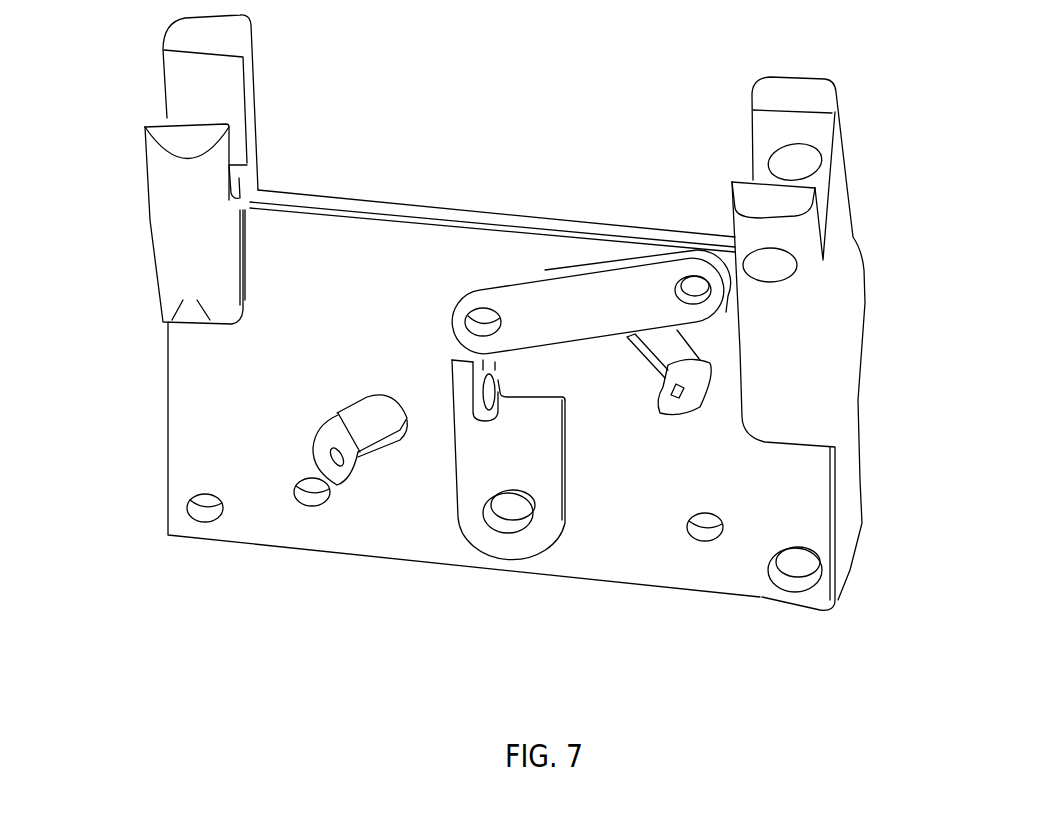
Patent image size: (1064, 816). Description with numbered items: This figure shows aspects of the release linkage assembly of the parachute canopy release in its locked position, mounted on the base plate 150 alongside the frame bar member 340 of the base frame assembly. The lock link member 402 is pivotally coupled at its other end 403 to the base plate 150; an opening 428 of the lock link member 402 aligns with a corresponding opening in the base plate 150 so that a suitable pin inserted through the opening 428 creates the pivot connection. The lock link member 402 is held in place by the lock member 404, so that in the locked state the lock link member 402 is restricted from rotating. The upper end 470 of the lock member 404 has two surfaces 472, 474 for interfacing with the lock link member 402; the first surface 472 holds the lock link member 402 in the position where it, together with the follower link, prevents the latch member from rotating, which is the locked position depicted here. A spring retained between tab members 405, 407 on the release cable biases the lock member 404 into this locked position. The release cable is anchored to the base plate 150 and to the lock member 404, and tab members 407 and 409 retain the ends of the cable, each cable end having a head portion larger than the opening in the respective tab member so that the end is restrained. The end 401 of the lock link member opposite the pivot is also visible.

The base plate 150 is at (242, 545).
The frame bar member 340 is at (858, 360).
The first link pivot 401 is at (467, 290).
The lock link member 402 is at (533, 280).
The other end of lock link member 403 is at (692, 265).
The lock member 404 is at (457, 480).
The tab member 405 is at (308, 452).
The tab member 407 is at (488, 413).
The tab member 409 is at (698, 383).
The opening of lock link member 428 is at (700, 293).
The upper end of lock member 470 is at (452, 393).
The first surface 472 is at (543, 397).
The second surface 474 is at (458, 358).